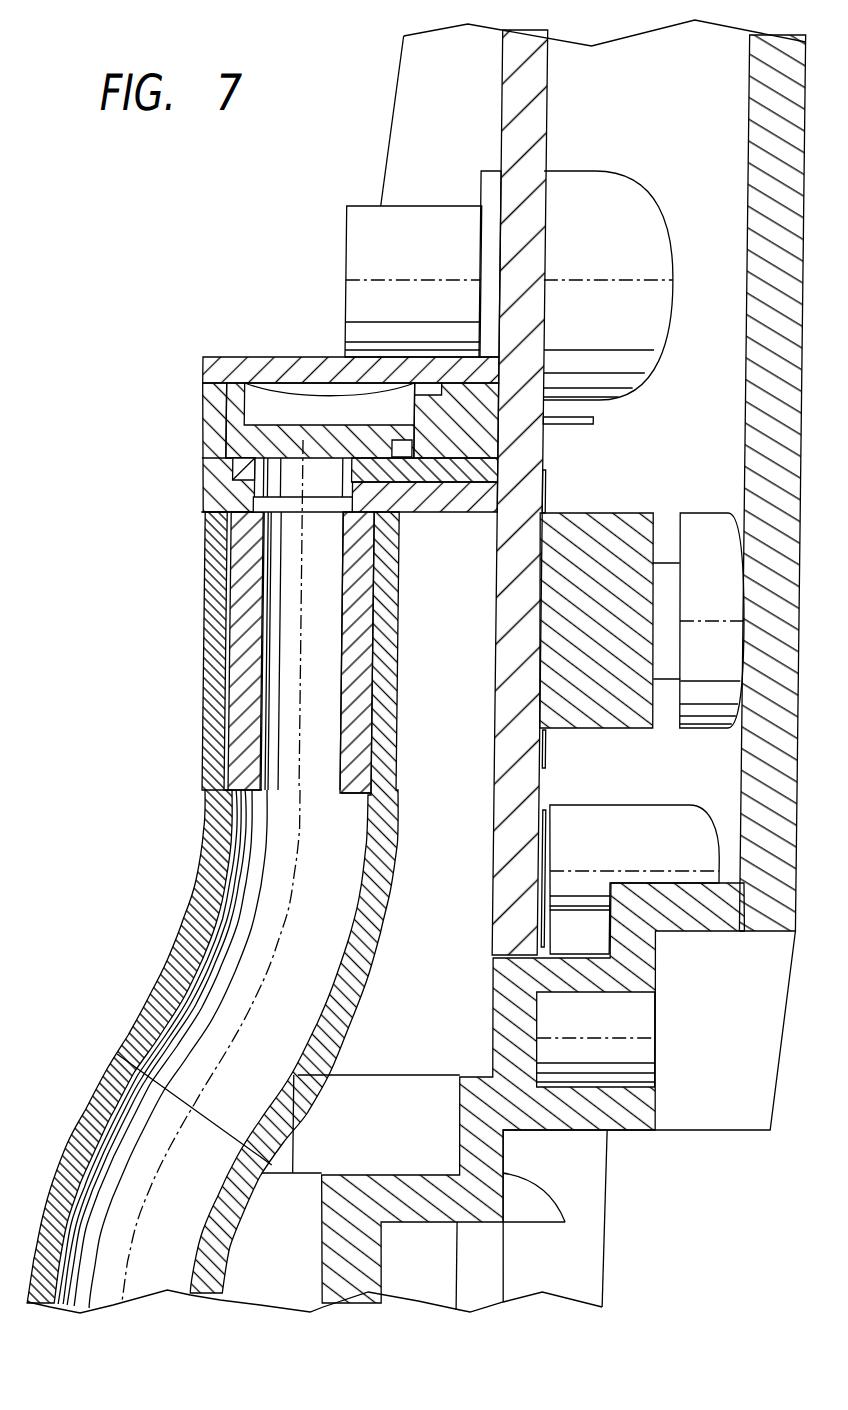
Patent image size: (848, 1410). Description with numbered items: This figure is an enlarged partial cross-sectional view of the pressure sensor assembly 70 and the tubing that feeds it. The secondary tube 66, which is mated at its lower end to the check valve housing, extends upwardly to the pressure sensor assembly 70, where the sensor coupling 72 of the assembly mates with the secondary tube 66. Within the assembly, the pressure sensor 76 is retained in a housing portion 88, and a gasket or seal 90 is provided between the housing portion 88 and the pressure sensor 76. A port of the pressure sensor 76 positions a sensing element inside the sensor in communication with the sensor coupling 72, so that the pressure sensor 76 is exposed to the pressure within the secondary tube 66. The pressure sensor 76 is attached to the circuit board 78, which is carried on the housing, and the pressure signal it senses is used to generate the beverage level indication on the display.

The secondary tube 66 is at (211, 901).
The pressure sensor assembly 70 is at (196, 433).
The sensor coupling 72 is at (251, 670).
The pressure sensor 76 is at (256, 410).
The circuit board 78 is at (521, 124).
The housing portion 88 is at (214, 483).
The gasket or seal 90 is at (247, 476).